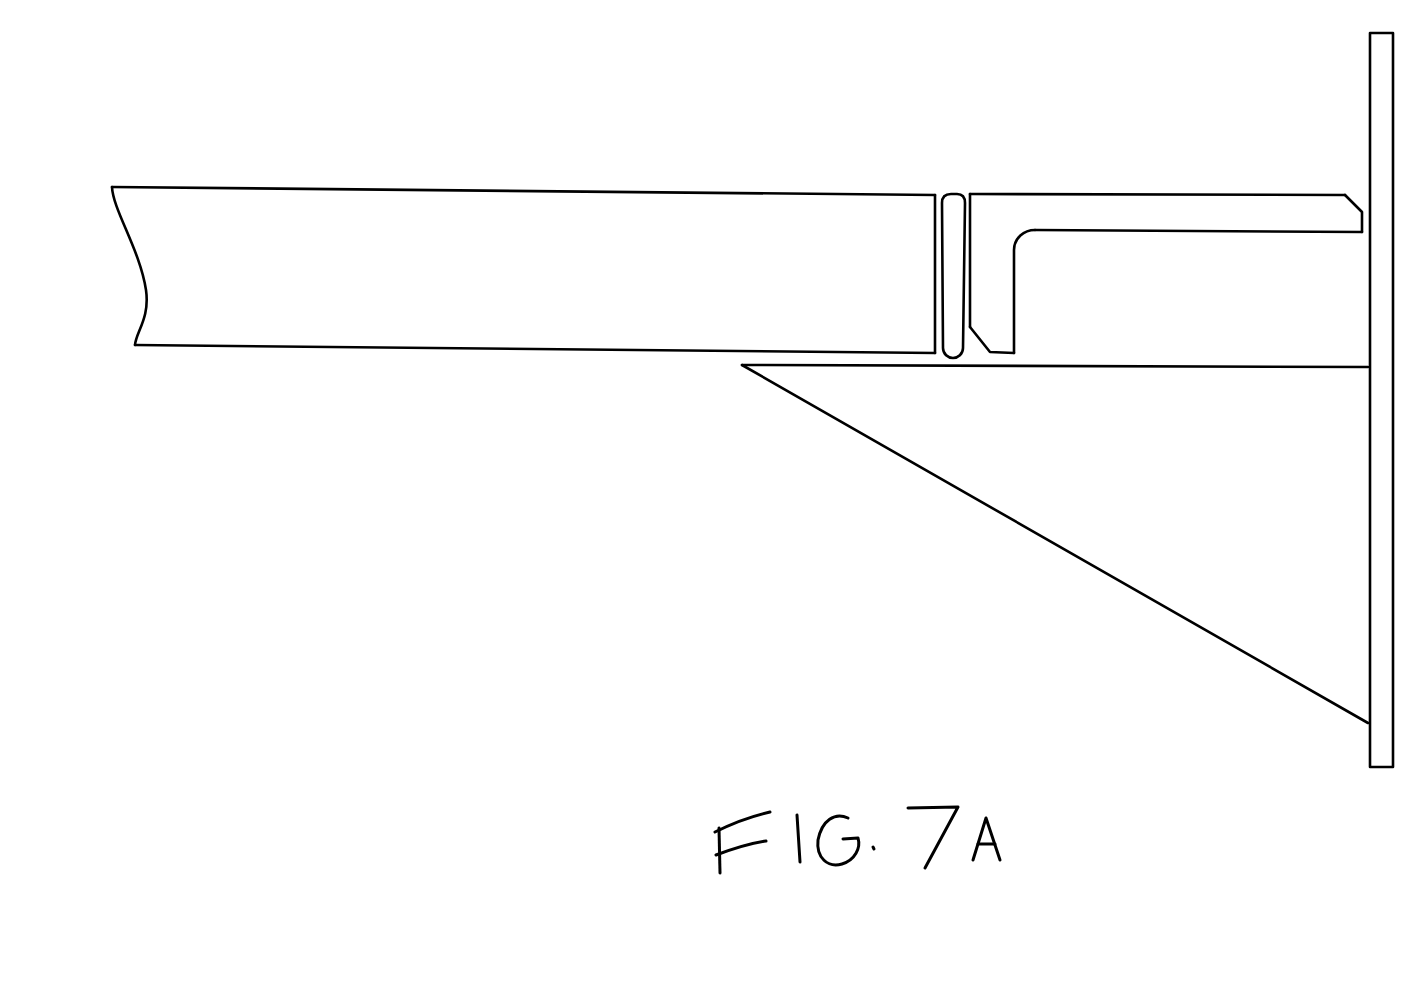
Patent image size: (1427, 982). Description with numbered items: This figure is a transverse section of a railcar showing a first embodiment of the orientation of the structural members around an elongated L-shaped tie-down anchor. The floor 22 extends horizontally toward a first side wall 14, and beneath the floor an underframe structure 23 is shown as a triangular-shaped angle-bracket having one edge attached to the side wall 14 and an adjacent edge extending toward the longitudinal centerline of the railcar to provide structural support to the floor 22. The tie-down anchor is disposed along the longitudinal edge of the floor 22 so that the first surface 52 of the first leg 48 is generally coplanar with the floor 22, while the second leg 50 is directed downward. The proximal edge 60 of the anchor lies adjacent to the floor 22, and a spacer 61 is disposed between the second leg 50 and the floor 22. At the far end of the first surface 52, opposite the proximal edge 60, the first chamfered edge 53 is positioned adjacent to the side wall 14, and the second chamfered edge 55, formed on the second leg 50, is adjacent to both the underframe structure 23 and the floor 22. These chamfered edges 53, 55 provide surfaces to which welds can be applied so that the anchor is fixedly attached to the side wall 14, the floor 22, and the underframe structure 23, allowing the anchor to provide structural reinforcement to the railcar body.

The first side wall 14 is at (1387, 72).
The floor 22 is at (742, 210).
The underframe structure 23 is at (1158, 578).
The first leg 48 is at (1288, 217).
The second leg 50 is at (1007, 295).
The first surface 52 is at (1262, 195).
The first chamfered edge 53 is at (1350, 197).
The second chamfered edge 55 is at (985, 349).
The proximal edge 60 is at (970, 192).
The spacer 61 is at (952, 205).